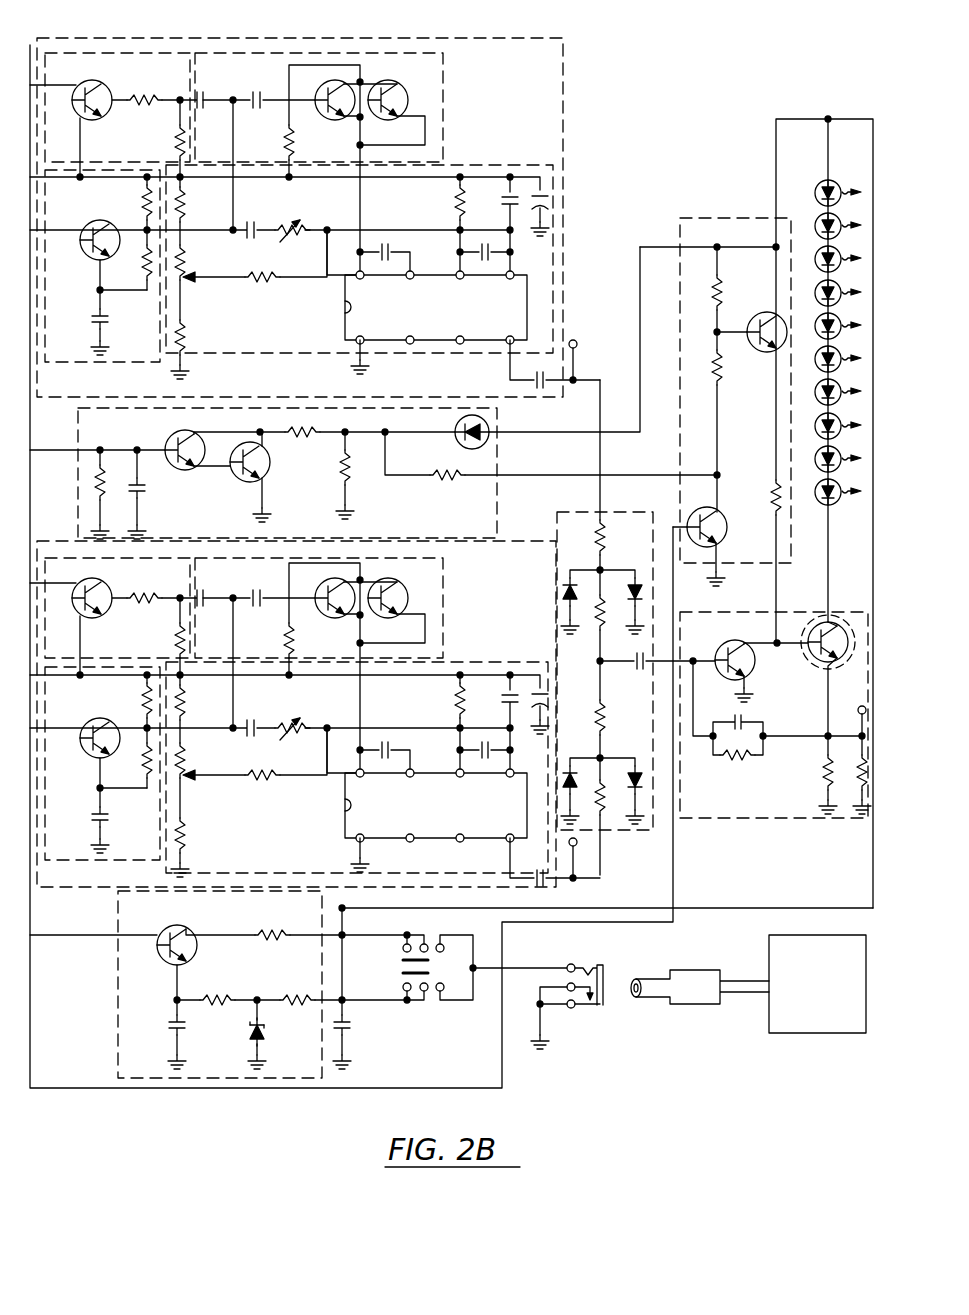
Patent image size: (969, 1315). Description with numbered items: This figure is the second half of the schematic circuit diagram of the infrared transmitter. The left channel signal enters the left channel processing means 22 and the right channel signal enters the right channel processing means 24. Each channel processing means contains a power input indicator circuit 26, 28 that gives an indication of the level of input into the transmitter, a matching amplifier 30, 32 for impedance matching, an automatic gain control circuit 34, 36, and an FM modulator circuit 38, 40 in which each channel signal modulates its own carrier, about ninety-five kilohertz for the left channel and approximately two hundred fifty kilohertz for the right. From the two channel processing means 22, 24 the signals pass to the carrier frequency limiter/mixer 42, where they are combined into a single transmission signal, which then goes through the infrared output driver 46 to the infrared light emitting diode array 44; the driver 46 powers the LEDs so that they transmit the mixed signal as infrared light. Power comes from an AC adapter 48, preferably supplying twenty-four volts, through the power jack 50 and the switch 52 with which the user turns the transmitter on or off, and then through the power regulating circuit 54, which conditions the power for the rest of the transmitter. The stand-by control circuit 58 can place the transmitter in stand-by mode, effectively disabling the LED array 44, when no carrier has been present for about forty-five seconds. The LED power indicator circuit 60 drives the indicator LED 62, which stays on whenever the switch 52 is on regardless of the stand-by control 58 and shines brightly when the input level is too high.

The left channel processing means 22 is at (252, 6).
The right channel processing means 24 is at (58, 892).
The power input indicator circuit 26 is at (133, 22).
The power input indicator circuit 28 is at (60, 567).
The matching amplifier 30 is at (140, 362).
The matching amplifier 32 is at (100, 876).
The automatic gain control circuit 34 is at (443, 72).
The automatic gain control circuit 36 is at (443, 568).
The FM modulator circuit 38 is at (483, 163).
The FM modulator circuit 40 is at (505, 645).
The carrier frequency limiter/mixer 42 is at (557, 520).
The infrared light emitting diode array 44 is at (812, 197).
The infrared output driver 46 is at (684, 818).
The AC adapter 48 is at (769, 935).
The power jack 50 is at (595, 965).
The switch 52 is at (437, 937).
The power regulating circuit 54 is at (118, 985).
The stand-by control circuit 58 is at (680, 218).
The LED power indicator circuit 60 is at (497, 520).
The indicator LED 62 is at (457, 440).